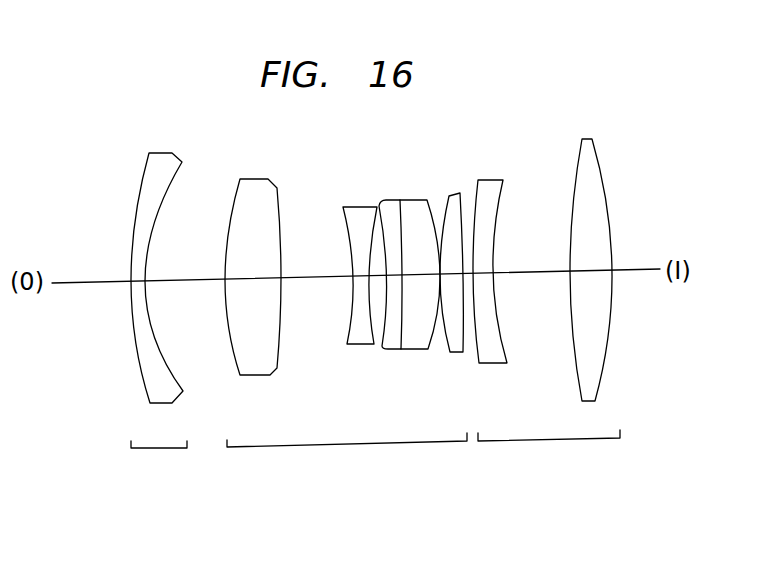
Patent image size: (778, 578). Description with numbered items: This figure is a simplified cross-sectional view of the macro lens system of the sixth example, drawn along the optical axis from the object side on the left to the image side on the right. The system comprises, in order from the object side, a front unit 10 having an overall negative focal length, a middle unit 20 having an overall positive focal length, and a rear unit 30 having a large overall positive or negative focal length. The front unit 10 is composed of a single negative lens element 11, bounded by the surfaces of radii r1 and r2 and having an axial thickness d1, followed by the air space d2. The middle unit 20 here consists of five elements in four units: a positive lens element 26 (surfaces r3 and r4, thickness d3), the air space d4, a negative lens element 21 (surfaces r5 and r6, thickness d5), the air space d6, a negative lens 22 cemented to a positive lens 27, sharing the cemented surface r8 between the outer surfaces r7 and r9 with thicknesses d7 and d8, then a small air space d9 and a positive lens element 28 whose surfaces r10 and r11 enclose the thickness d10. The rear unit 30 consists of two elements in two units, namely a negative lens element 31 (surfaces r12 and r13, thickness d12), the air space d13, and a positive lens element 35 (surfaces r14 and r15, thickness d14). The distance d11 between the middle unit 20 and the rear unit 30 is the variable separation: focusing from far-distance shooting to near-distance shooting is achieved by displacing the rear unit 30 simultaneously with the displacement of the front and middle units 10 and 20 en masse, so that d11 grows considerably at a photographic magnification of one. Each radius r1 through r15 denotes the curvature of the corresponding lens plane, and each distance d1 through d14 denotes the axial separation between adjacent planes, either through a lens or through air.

The front unit 10 is at (159, 474).
The negative lens element 11 is at (163, 404).
The middle unit 20 is at (347, 470).
The negative lens element 21 is at (358, 347).
The negative lens 22 is at (402, 350).
The positive lens element 26 is at (253, 377).
The positive lens 27 is at (420, 350).
The positive lens element 28 is at (455, 355).
The rear unit 30 is at (549, 466).
The negative lens element 31 is at (492, 365).
The positive lens element 35 is at (588, 402).
The radius of curvature of lens plane 1 r1 is at (150, 153).
The radius of curvature of lens plane 2 r2 is at (182, 162).
The radius of curvature of lens plane 3 r3 is at (240, 179).
The radius of curvature of lens plane 4 r4 is at (277, 188).
The radius of curvature of lens plane 5 r5 is at (345, 207).
The radius of curvature of lens plane 6 r6 is at (377, 207).
The radius of curvature of lens plane 7 r7 is at (380, 201).
The radius of curvature of lens plane 8 r8 is at (400, 200).
The radius of curvature of lens plane 9 r9 is at (428, 200).
The radius of curvature of lens plane 10 r10 is at (452, 195).
The radius of curvature of lens plane 11 r11 is at (461, 193).
The radius of curvature of lens plane 12 r12 is at (479, 180).
The radius of curvature of lens plane 13 r13 is at (503, 180).
The radius of curvature of lens plane 14 r14 is at (582, 139).
The radius of curvature of lens plane 15 r15 is at (592, 139).
The distance between plane 1 and plane 2 d1 is at (138, 279).
The distance between plane 2 and plane 3 d2 is at (181, 278).
The distance between plane 3 and plane 4 d3 is at (250, 278).
The distance between plane 4 and plane 5 d4 is at (320, 277).
The distance between plane 5 and plane 6 d5 is at (362, 275).
The distance between plane 6 and plane 7 d6 is at (375, 288).
The distance between plane 7 and plane 8 d7 is at (392, 300).
The distance between plane 8 and plane 9 d8 is at (418, 278).
The distance between plane 9 and plane 10 d9 is at (438, 268).
The distance between plane 10 and plane 11 d10 is at (465, 355).
The distance between plane 11 and plane 12 d11 is at (477, 256).
The distance between plane 12 and plane 13 d12 is at (492, 265).
The distance between plane 13 and plane 14 d13 is at (528, 273).
The distance between plane 14 and plane 15 d14 is at (588, 270).